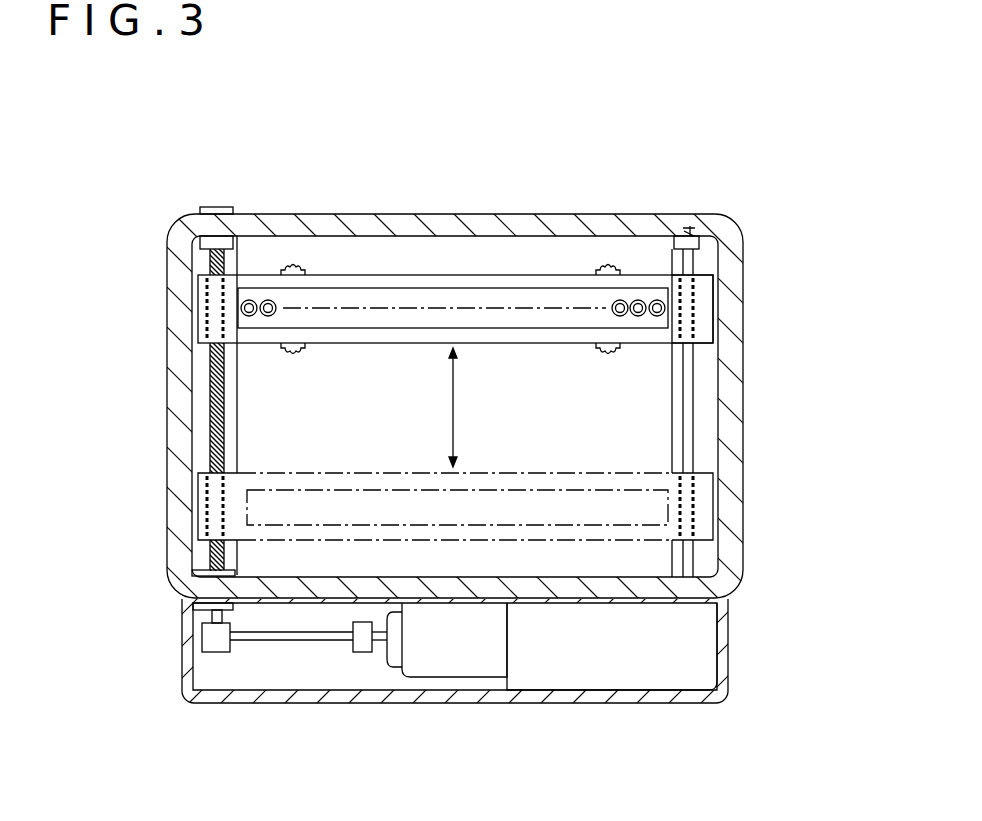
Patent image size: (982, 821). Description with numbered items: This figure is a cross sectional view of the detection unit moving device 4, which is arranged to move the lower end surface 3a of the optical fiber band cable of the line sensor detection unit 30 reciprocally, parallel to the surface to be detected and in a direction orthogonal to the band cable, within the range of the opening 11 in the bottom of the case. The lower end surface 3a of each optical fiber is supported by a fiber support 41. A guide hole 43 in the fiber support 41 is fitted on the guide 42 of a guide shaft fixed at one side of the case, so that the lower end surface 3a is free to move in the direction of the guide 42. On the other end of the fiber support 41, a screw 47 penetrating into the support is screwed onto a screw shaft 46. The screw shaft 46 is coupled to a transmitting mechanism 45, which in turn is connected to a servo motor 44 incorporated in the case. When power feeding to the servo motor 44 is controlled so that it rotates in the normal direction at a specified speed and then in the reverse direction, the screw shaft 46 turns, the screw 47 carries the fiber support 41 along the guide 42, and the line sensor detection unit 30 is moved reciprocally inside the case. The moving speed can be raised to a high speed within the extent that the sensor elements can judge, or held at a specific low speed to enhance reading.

The lower end surface 3a is at (270, 300).
The line sensor detection unit 30 is at (363, 293).
The fiber support 41 is at (460, 277).
The opening 11 is at (550, 257).
The guide hole 43 is at (693, 292).
The guide 42 is at (695, 385).
The screw shaft 46 is at (210, 410).
The screw 47 is at (207, 505).
The transmitting mechanism 45 is at (212, 667).
The servo motor 44 is at (467, 667).
The detection unit moving device 4 is at (505, 671).